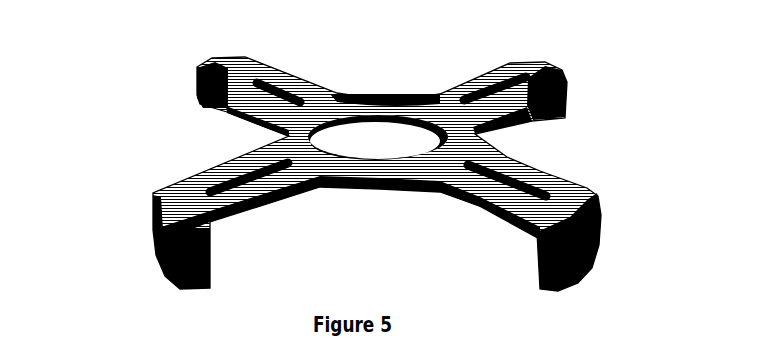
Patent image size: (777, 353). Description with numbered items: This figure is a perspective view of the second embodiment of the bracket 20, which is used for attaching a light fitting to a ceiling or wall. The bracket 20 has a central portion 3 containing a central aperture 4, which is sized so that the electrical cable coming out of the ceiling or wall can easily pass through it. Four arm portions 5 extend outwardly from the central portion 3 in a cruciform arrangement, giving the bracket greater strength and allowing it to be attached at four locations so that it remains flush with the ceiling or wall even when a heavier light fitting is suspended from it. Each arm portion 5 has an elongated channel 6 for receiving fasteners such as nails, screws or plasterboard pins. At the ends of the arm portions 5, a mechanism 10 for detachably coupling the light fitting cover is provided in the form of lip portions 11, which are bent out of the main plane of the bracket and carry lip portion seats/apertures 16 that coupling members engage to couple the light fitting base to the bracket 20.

The bracket 20 is at (160, 92).
The central portion 3 is at (373, 172).
The central aperture 4 is at (380, 138).
The arm portions 5 is at (562, 197).
The elongated channels 6 is at (240, 184).
The lip portion seats/apertures 16 is at (577, 240).
The mechanism 10 is at (138, 253).
The lip portions 11 is at (175, 270).